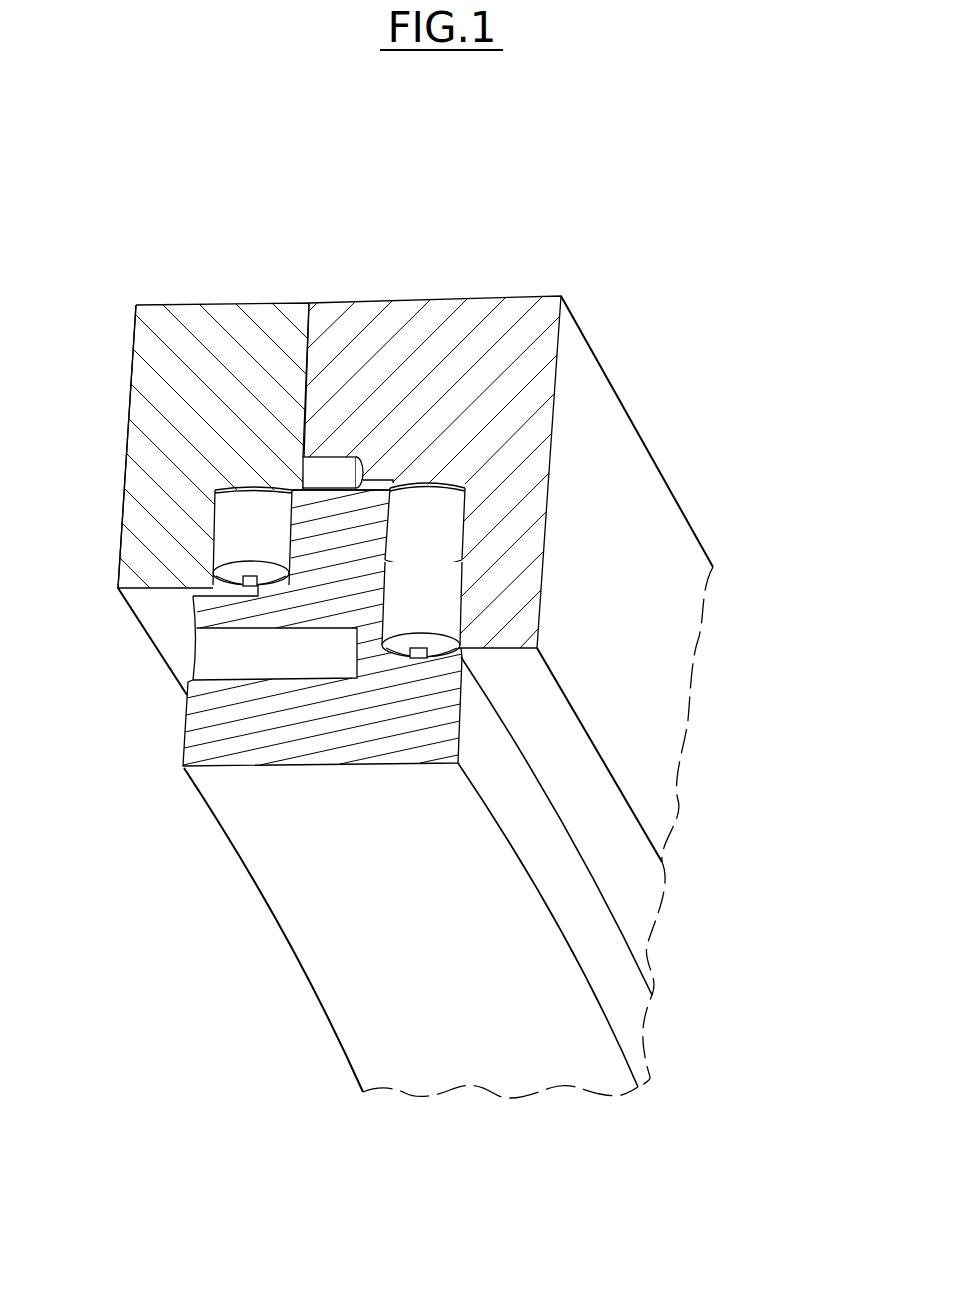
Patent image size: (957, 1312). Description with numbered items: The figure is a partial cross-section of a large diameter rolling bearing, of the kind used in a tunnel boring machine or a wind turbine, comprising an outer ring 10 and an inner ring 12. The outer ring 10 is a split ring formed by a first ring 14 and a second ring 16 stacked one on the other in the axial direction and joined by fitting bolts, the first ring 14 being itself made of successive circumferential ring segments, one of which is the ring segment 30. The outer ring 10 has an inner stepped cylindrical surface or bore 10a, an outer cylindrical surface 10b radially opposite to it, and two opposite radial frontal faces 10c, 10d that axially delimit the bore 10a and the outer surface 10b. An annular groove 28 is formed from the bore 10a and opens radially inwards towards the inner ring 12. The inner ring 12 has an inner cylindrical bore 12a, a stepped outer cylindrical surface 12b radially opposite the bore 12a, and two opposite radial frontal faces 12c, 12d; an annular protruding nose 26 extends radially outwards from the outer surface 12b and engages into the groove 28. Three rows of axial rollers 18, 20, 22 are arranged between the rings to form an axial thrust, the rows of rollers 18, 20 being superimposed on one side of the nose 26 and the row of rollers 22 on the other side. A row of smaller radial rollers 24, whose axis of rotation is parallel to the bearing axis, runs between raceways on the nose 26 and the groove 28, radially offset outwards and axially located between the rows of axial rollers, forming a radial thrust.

The outer ring 10 is at (706, 454).
The inner stepped cylindrical surface or bore 10a is at (155, 610).
The outer cylindrical surface 10b is at (667, 470).
The radial frontal face 10c is at (118, 515).
The radial frontal face 10d is at (672, 752).
The inner ring 12 is at (482, 1121).
The inner cylindrical bore 12a is at (366, 1050).
The stepped outer cylindrical surface 12b is at (160, 653).
The radial frontal face 12c is at (187, 727).
The radial frontal face 12d is at (610, 987).
The first ring 14 is at (434, 291).
The second ring 16 is at (217, 296).
The axial rollers 18 is at (435, 530).
The axial rollers 20 is at (431, 605).
The axial rollers 22 is at (265, 534).
The radial rollers 24 is at (315, 483).
The annular protruding nose 26 is at (335, 557).
The annular groove 28 is at (446, 492).
The circumferential ring segment 30 is at (686, 541).